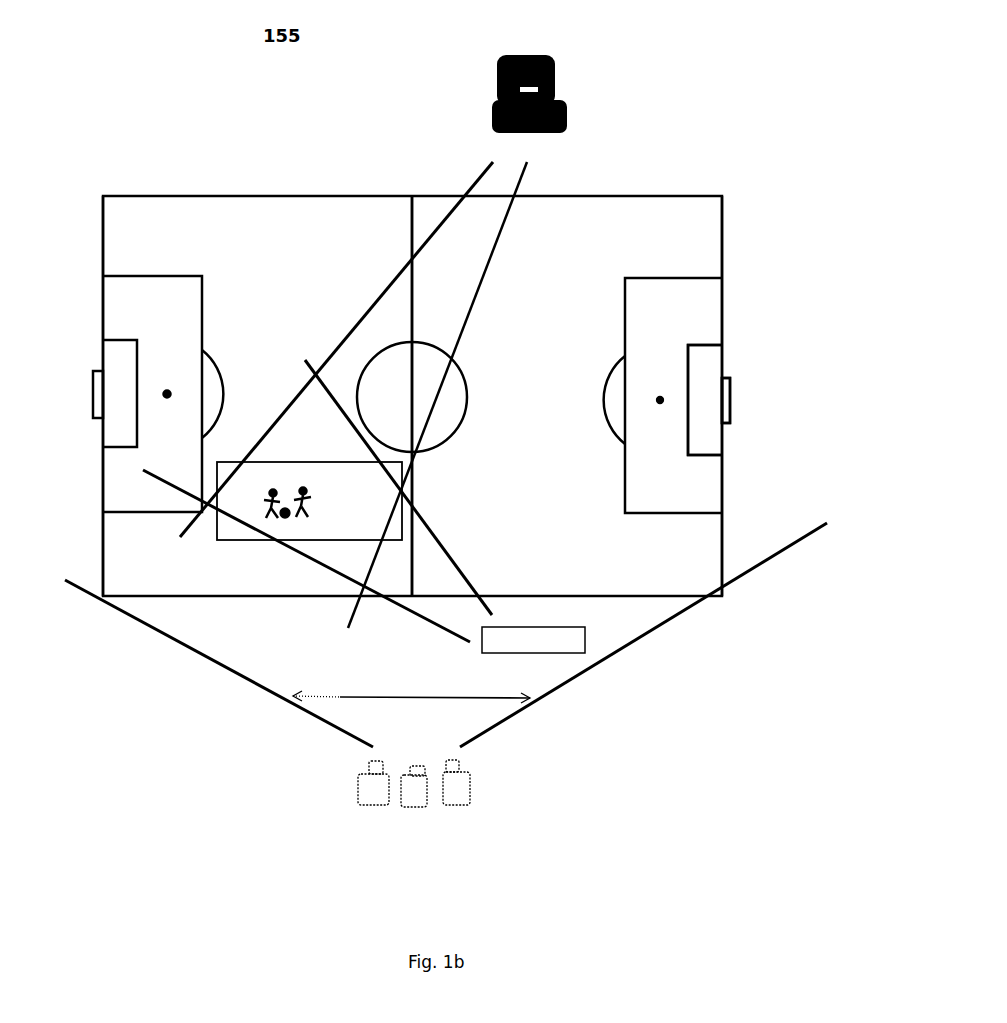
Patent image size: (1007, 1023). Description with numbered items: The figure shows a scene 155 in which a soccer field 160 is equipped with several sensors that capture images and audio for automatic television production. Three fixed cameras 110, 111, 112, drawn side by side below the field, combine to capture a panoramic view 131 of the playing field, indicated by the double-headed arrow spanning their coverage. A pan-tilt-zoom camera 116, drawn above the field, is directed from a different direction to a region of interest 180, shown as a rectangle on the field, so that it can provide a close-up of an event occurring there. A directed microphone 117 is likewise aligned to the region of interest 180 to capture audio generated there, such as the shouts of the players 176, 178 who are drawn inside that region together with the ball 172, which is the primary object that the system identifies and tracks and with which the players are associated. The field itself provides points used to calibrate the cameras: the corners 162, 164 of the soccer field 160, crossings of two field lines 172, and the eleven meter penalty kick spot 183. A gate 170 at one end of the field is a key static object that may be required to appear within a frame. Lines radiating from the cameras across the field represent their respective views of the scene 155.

The scene 155 is at (324, 93).
The PTZ camera 116 is at (556, 91).
The soccer field 160 is at (280, 195).
The corner 162 is at (104, 196).
The corner 164 is at (722, 198).
The ball 172 is at (410, 196).
The gate 170 is at (723, 393).
The 11 m penalty kick spot 183 is at (662, 401).
The region of interest 180 is at (217, 527).
The player 178 is at (268, 500).
The player 176 is at (300, 520).
The directed microphone 117 is at (586, 640).
The panoramic view 131 is at (402, 698).
The fixed camera 110 is at (358, 782).
The fixed camera 111 is at (413, 803).
The fixed camera 112 is at (471, 783).